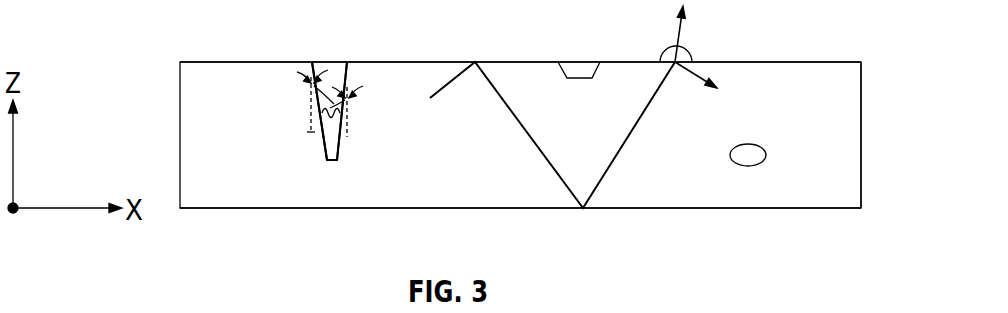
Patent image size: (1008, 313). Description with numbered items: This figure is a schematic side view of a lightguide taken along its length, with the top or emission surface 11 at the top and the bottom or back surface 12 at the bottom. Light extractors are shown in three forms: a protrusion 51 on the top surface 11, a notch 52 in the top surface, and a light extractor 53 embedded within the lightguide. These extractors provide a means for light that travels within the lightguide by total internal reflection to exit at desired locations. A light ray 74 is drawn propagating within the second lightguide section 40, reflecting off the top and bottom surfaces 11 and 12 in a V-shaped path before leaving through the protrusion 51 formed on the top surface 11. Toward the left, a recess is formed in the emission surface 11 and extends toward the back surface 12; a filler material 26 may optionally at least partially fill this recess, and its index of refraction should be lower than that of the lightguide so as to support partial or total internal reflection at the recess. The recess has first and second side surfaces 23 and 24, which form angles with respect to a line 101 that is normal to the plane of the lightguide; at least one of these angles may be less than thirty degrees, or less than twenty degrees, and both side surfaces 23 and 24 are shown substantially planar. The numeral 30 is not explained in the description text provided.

The sample block 30 is at (228, 75).
The top surface 11 is at (832, 62).
The bottom surface 12 is at (740, 208).
The second lightguide section 40 is at (853, 117).
The first side surface 23 is at (326, 162).
The second side surface 24 is at (338, 154).
The filler material 26 is at (338, 132).
The line 101 is at (311, 132).
The light ray 74 is at (452, 80).
The protrusion 51 is at (690, 50).
The notch 52 is at (581, 72).
The light extractor 53 is at (758, 155).